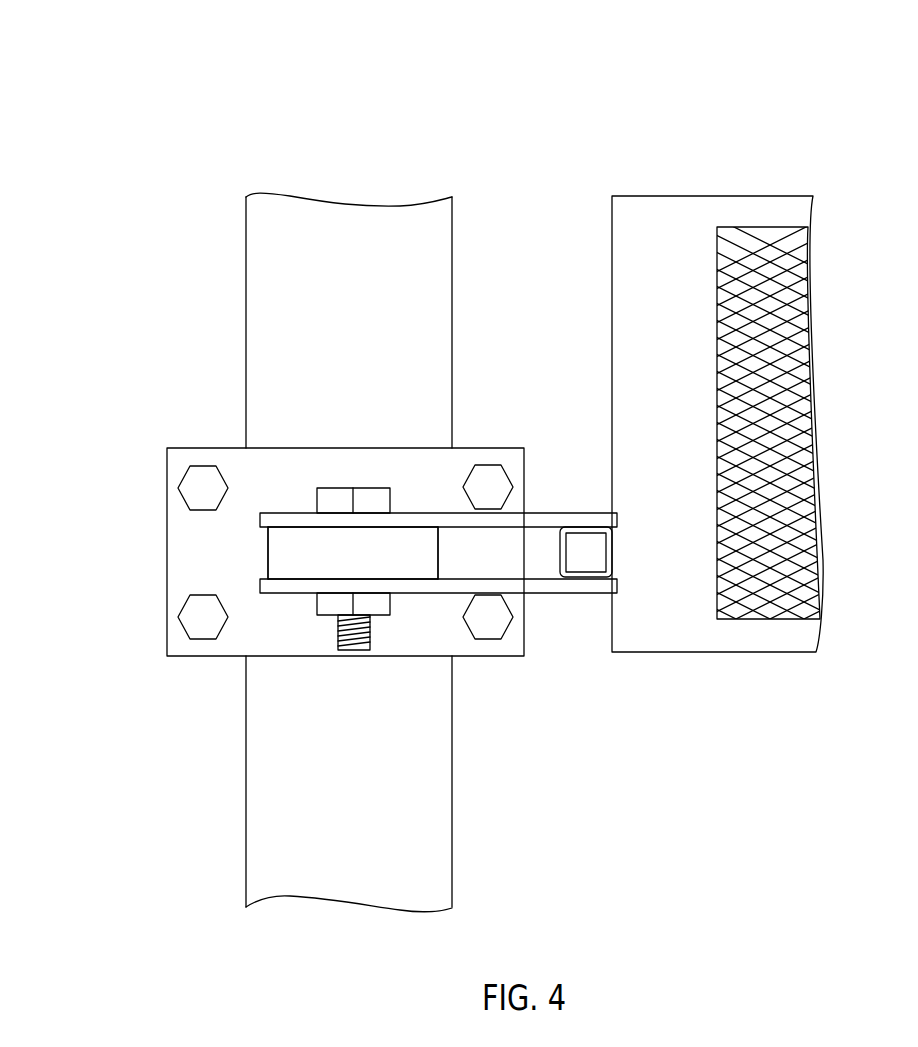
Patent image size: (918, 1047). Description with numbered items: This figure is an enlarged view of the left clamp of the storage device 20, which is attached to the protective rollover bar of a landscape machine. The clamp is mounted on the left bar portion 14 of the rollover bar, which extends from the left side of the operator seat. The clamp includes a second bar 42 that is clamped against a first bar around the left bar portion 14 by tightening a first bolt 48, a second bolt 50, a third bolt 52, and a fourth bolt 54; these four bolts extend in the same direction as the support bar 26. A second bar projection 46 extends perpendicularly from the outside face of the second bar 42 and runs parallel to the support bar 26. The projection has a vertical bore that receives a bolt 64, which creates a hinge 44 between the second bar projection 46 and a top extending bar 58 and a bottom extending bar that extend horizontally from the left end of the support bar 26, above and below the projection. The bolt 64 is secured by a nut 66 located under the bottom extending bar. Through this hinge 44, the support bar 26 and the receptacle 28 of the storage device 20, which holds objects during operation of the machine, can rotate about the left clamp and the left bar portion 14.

The left bar portion 14 is at (337, 220).
The storage device 20 is at (578, 252).
The support bar 26 is at (612, 565).
The receptacle 28 is at (668, 212).
The second bar 42 is at (285, 473).
The hinge 44 is at (342, 550).
The second bar projection 46 is at (297, 557).
The first bolt 48 is at (203, 483).
The second bolt 50 is at (203, 617).
The third bolt 52 is at (490, 483).
The fourth bolt 54 is at (487, 623).
The top extending bar 58 is at (425, 518).
The bolt 64 is at (370, 497).
The nut 66 is at (338, 607).